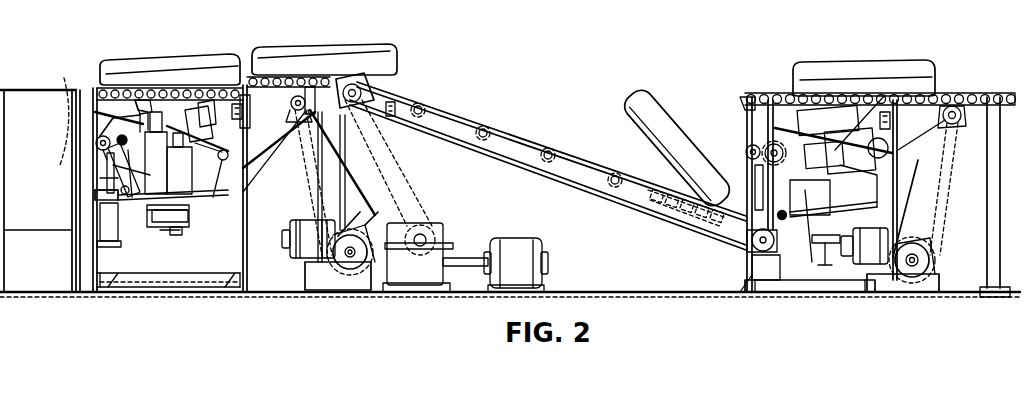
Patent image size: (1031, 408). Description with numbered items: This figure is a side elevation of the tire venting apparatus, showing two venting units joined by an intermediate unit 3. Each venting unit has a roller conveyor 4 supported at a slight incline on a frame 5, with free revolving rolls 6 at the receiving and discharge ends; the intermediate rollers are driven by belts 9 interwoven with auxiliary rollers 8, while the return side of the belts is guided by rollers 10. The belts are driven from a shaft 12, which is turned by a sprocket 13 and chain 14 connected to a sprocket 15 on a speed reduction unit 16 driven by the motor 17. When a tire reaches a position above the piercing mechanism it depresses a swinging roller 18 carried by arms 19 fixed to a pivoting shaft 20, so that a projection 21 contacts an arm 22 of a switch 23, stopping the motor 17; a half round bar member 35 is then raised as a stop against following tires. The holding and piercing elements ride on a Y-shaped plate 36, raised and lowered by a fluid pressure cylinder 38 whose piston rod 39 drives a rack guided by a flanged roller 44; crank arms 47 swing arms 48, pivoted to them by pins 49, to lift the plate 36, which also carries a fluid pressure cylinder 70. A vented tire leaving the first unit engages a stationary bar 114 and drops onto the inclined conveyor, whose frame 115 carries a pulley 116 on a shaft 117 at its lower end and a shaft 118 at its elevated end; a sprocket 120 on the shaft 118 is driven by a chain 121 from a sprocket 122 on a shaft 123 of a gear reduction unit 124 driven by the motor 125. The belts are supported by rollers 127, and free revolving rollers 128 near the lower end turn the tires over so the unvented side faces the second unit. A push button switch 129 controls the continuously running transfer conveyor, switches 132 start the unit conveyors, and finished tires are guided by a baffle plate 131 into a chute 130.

The intermediate unit 3 is at (456, 112).
The roller conveyor 4 is at (241, 88).
The frame 5 is at (80, 200).
The free revolving rolls 6 is at (315, 80).
The auxiliary rollers 8 is at (205, 88).
The belts 9 is at (746, 150).
The rollers 10 is at (758, 128).
The shaft 12 is at (298, 96).
The sprocket 13 is at (308, 155).
The chain 14 is at (312, 178).
The sprocket 15 is at (352, 225).
The speed reduction unit 16 is at (341, 262).
The motor 17 is at (295, 242).
The swinging roller 18 is at (122, 85).
The arms 19 is at (150, 100).
The pivoting shaft 20 is at (152, 125).
The projection 21 is at (163, 112).
The arm 22 is at (134, 147).
The switch 23 is at (206, 148).
The half round bar member 35 is at (250, 85).
The plate 36 is at (206, 160).
The fluid pressure cylinder 38 is at (113, 230).
The piston rod 39 is at (100, 178).
The flanged roller 44 is at (98, 140).
The crank arms 47 is at (106, 158).
The arms 48 is at (113, 165).
The pins 49 is at (155, 128).
The fluid pressure cylinder 70 is at (174, 175).
The stationary bar 114 is at (742, 100).
The frame 115 is at (580, 178).
The pulley 116 is at (768, 258).
The shaft 117 is at (777, 240).
The shaft 118 is at (358, 82).
The sprocket 120 is at (363, 92).
The chain 121 is at (407, 194).
The sprocket 122 is at (430, 227).
The shaft 123 is at (418, 258).
The gear reduction unit 124 is at (443, 236).
The motor 125 is at (518, 246).
The rollers 127 is at (548, 150).
The free revolving rollers 128 is at (655, 200).
The push button switch 129 is at (396, 103).
The chute 130 is at (30, 90).
The baffle plate 131 is at (64, 88).
The switches 132 is at (300, 158).